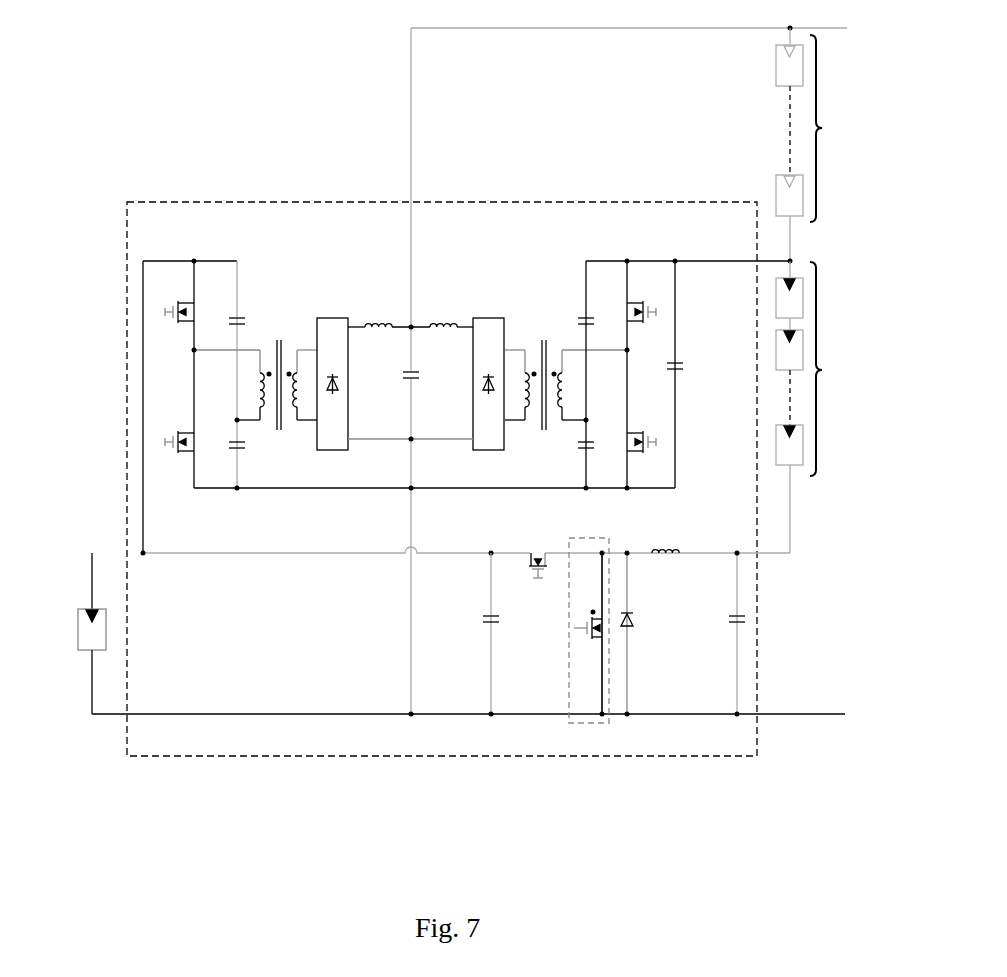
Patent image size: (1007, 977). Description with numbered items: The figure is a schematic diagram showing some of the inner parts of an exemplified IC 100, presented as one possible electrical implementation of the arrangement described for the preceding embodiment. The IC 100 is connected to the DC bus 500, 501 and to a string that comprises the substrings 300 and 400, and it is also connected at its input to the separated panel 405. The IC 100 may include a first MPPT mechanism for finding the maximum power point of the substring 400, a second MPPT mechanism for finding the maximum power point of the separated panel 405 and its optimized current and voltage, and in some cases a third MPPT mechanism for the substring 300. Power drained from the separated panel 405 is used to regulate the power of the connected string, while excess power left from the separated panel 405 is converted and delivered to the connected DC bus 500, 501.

The IC 100 is at (151, 200).
The substring 300 is at (819, 406).
The substring 400 is at (821, 144).
The separated panel 405 is at (78, 630).
The DC bus 500 is at (465, 28).
The DC bus 501 is at (241, 718).